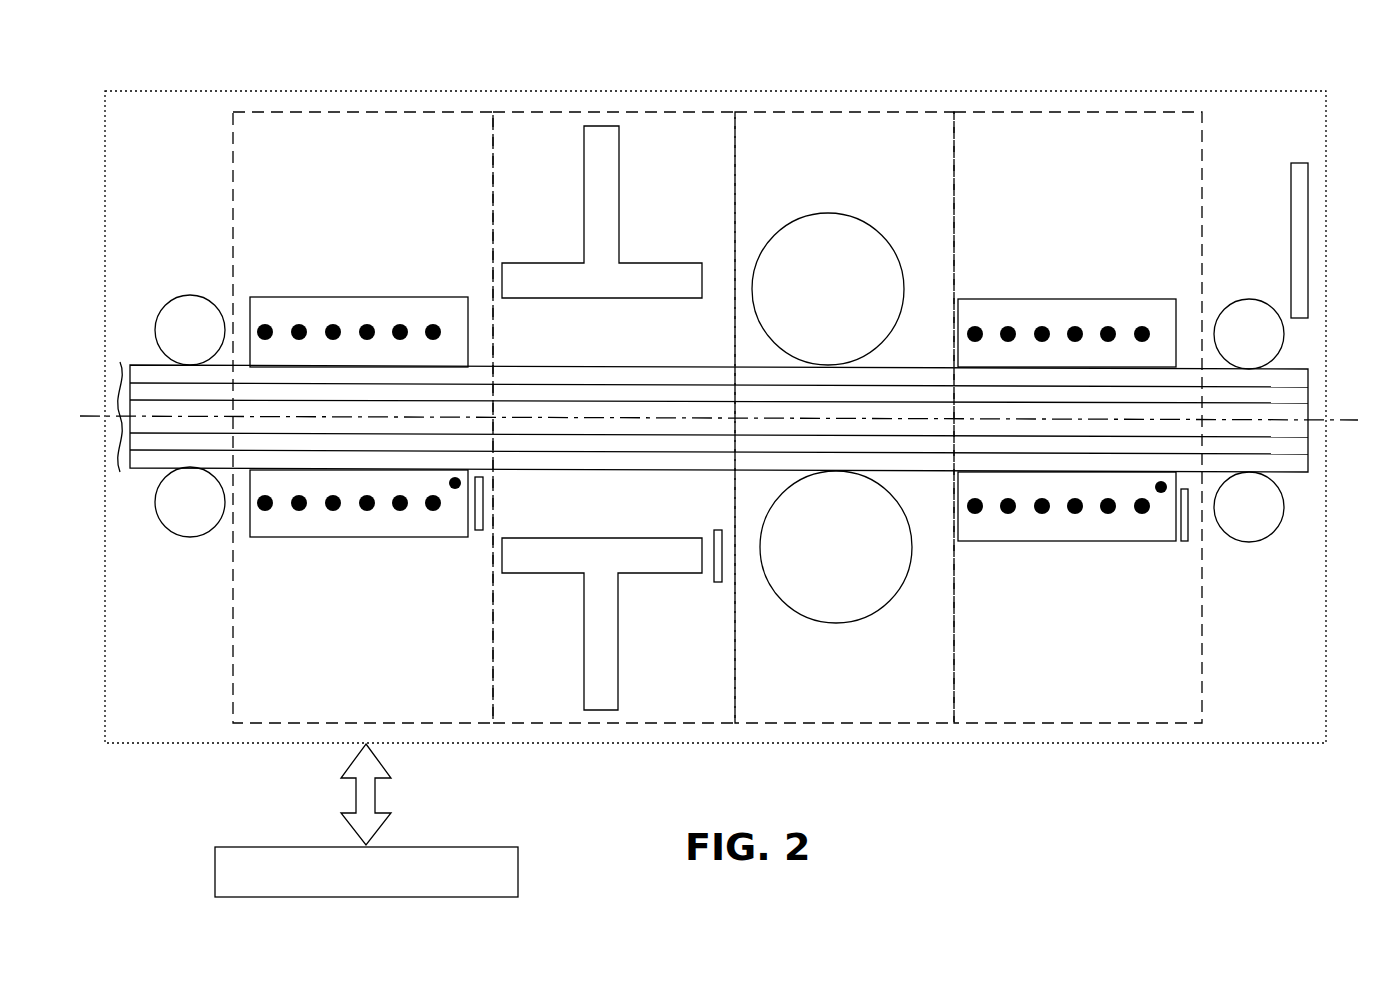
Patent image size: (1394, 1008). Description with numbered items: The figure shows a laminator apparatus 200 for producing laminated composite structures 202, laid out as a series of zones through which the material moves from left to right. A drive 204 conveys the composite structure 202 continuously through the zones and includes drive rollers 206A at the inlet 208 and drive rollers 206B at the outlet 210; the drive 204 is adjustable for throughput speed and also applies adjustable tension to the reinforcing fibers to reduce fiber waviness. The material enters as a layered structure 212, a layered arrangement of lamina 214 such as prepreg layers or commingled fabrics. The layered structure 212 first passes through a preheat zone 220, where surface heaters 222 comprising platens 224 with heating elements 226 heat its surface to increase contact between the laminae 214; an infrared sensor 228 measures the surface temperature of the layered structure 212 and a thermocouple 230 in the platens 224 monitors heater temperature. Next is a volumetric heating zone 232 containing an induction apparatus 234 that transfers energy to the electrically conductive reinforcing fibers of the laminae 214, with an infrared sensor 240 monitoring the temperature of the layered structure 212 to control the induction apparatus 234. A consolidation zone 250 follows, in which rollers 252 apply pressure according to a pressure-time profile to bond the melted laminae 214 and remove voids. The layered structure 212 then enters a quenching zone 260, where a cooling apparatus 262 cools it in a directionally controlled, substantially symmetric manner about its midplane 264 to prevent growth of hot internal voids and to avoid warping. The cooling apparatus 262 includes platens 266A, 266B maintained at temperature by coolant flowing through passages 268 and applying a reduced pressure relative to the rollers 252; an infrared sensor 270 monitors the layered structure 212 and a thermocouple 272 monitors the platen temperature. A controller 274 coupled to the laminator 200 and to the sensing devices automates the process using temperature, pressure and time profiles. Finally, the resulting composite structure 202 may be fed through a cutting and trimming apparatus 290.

The apparatus 200 is at (920, 92).
The composite structure 202 is at (1322, 376).
The drive 204 is at (180, 268).
The drive roller 206A is at (212, 297).
The drive roller 206B is at (1262, 300).
The inlet 208 is at (89, 350).
The outlet 210 is at (1340, 454).
The layered structure 212 is at (115, 415).
The lamina 214 is at (125, 445).
The preheat zone 220 is at (284, 112).
The surface heater 222 is at (370, 410).
The platen 224 is at (292, 297).
The heating element 226 is at (336, 324).
The infrared sensor 228 is at (480, 530).
The thermocouple 230 is at (455, 490).
The volumetric heating zone 232 is at (553, 112).
The induction apparatus 234 is at (637, 263).
The infrared sensor 240 is at (718, 582).
The consolidation zone 250 is at (787, 112).
The roller 252 is at (790, 220).
The quenching zone 260 is at (1005, 113).
The cooling apparatus 262 is at (1078, 400).
The midplane 264 is at (1332, 422).
The platen 266A is at (978, 299).
The platen 266B is at (1045, 541).
The passage 268 is at (1044, 330).
The infrared sensor 270 is at (1186, 541).
The thermocouple 272 is at (1161, 493).
The controller 274 is at (435, 847).
The cutting and trimming apparatus 290 is at (1291, 175).